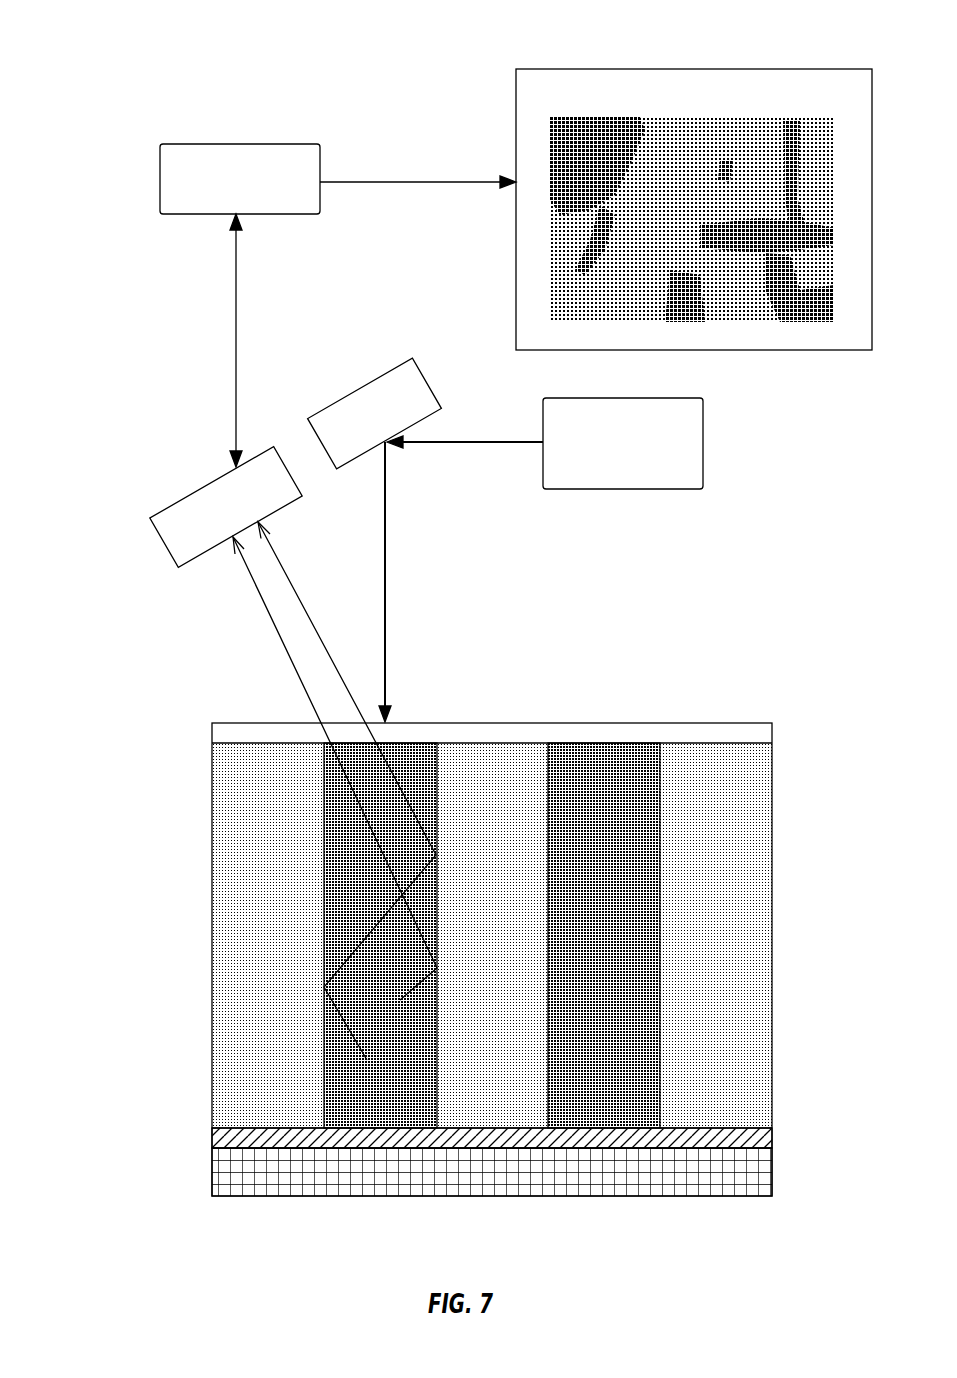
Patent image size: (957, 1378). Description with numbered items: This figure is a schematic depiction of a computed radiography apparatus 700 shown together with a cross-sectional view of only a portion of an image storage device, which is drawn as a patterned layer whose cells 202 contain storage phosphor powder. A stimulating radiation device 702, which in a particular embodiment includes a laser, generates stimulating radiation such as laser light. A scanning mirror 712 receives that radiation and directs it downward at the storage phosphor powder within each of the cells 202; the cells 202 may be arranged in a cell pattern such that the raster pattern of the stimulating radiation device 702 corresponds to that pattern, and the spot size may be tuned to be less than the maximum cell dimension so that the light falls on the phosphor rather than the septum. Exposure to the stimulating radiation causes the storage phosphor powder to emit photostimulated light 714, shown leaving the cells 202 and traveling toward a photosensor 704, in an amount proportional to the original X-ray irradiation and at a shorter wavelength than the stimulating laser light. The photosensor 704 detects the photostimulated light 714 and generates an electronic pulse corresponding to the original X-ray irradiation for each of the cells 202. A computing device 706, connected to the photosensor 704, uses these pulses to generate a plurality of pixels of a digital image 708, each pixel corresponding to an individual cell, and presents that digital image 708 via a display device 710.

The computed radiography apparatus 700 is at (122, 82).
The stimulating radiation device 702 is at (628, 489).
The photosensor 704 is at (202, 487).
The computing device 706 is at (235, 144).
The digital image 708 is at (758, 320).
The display device 710 is at (675, 68).
The scanning mirror 712 is at (368, 385).
The photostimulated light 714 is at (222, 630).
The cells 202 is at (389, 1086).